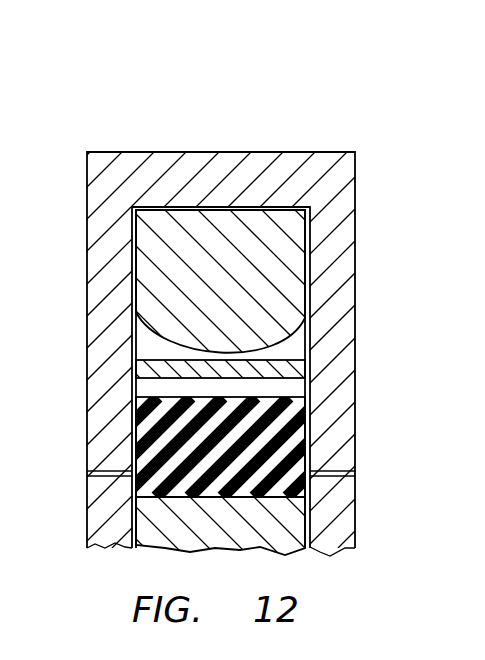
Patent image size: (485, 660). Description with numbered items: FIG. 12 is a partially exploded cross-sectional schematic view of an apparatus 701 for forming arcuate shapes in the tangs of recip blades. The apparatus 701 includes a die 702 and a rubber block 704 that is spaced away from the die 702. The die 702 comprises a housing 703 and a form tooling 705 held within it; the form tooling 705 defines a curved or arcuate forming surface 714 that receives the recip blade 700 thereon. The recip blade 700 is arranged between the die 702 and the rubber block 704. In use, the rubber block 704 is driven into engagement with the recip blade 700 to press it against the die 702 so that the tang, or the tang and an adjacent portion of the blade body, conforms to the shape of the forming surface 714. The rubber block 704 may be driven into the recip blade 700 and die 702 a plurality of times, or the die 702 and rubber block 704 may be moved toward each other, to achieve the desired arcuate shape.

The apparatus 701 is at (337, 105).
The die 702 is at (207, 143).
The housing 703 is at (338, 181).
The form tooling 705 is at (300, 282).
The forming surface 714 is at (152, 354).
The recip blade 700 is at (312, 360).
The rubber block 704 is at (157, 451).